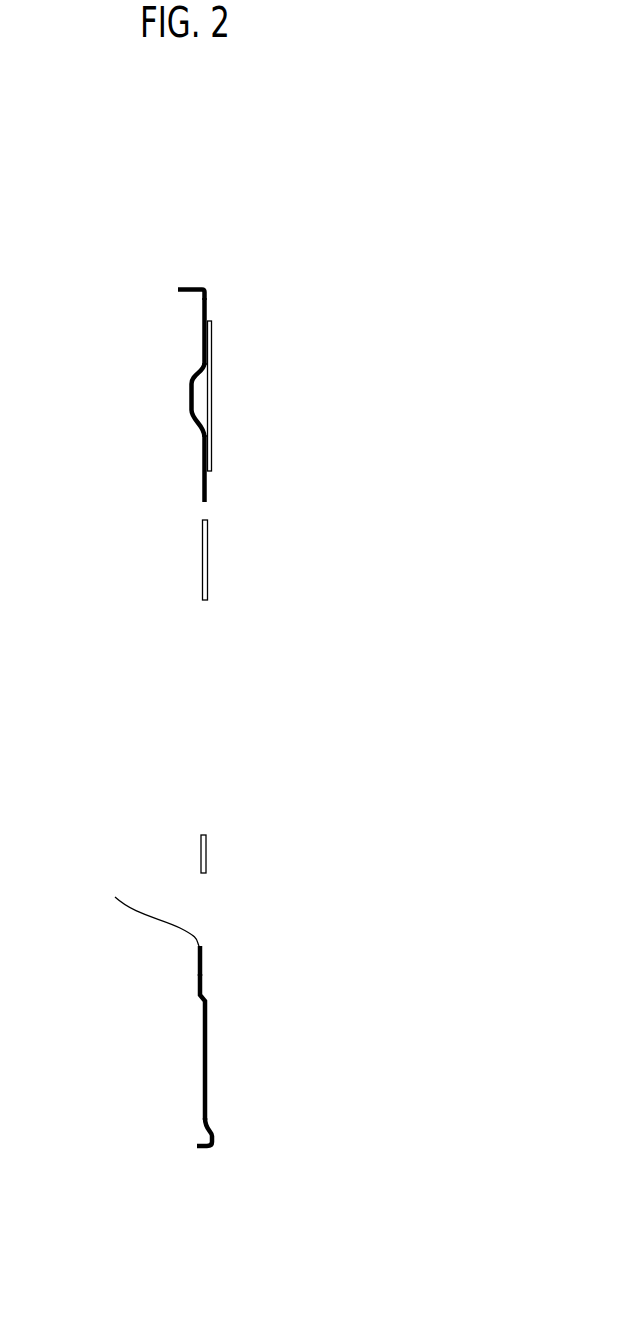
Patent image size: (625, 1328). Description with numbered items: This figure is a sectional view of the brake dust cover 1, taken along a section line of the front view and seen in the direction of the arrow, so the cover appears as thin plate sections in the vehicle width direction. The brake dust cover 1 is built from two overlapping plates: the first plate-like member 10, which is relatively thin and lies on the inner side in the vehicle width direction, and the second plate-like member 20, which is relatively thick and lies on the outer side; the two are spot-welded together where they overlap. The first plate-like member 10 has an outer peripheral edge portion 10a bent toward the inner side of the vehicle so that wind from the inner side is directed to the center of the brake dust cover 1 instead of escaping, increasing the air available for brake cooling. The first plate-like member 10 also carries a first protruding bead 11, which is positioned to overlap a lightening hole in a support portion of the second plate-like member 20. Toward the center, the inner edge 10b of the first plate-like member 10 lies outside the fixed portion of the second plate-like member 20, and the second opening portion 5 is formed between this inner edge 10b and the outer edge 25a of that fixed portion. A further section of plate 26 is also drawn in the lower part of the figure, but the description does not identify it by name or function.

The brake dust cover 1 is at (228, 280).
The second opening portion 5 is at (148, 909).
The first plate-like member 10 is at (197, 992).
The outer peripheral edge portion 10a is at (188, 286).
The inner edge 10b is at (200, 944).
The first protruding bead 11 is at (190, 394).
The second plate-like member 20 is at (212, 412).
The outer edge of the fixed portion 25a is at (205, 873).
The second plate member 26 is at (203, 601).